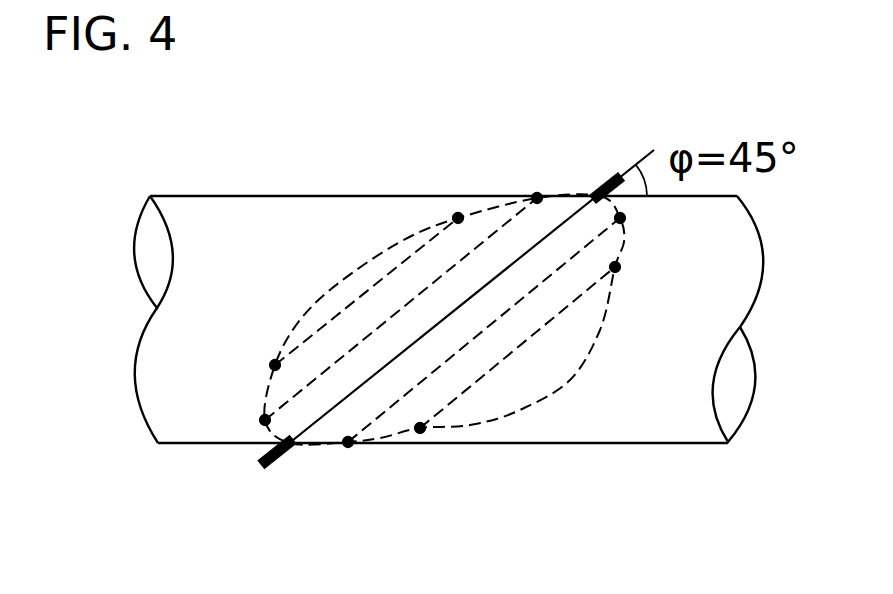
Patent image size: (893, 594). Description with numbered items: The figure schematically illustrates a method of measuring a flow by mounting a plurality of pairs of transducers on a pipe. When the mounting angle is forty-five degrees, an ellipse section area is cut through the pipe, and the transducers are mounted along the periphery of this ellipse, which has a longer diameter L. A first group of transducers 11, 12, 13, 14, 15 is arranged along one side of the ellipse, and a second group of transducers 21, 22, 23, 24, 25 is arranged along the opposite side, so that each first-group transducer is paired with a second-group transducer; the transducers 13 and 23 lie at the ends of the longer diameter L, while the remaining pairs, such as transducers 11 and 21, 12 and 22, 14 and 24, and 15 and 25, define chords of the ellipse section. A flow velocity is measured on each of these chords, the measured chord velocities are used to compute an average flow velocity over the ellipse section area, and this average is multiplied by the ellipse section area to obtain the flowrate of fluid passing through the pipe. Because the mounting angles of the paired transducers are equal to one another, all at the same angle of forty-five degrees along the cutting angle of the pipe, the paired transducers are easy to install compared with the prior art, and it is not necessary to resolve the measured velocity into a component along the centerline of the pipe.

The transducer 11 is at (458, 218).
The transducer 12 is at (537, 197).
The transducer 13 is at (605, 178).
The transducer 14 is at (620, 218).
The transducer 15 is at (615, 267).
The transducer 21 is at (275, 365).
The transducer 22 is at (265, 420).
The transducer 23 is at (285, 463).
The transducer 24 is at (348, 443).
The transducer 25 is at (420, 428).
The longer diameter of the ellipse L is at (450, 315).